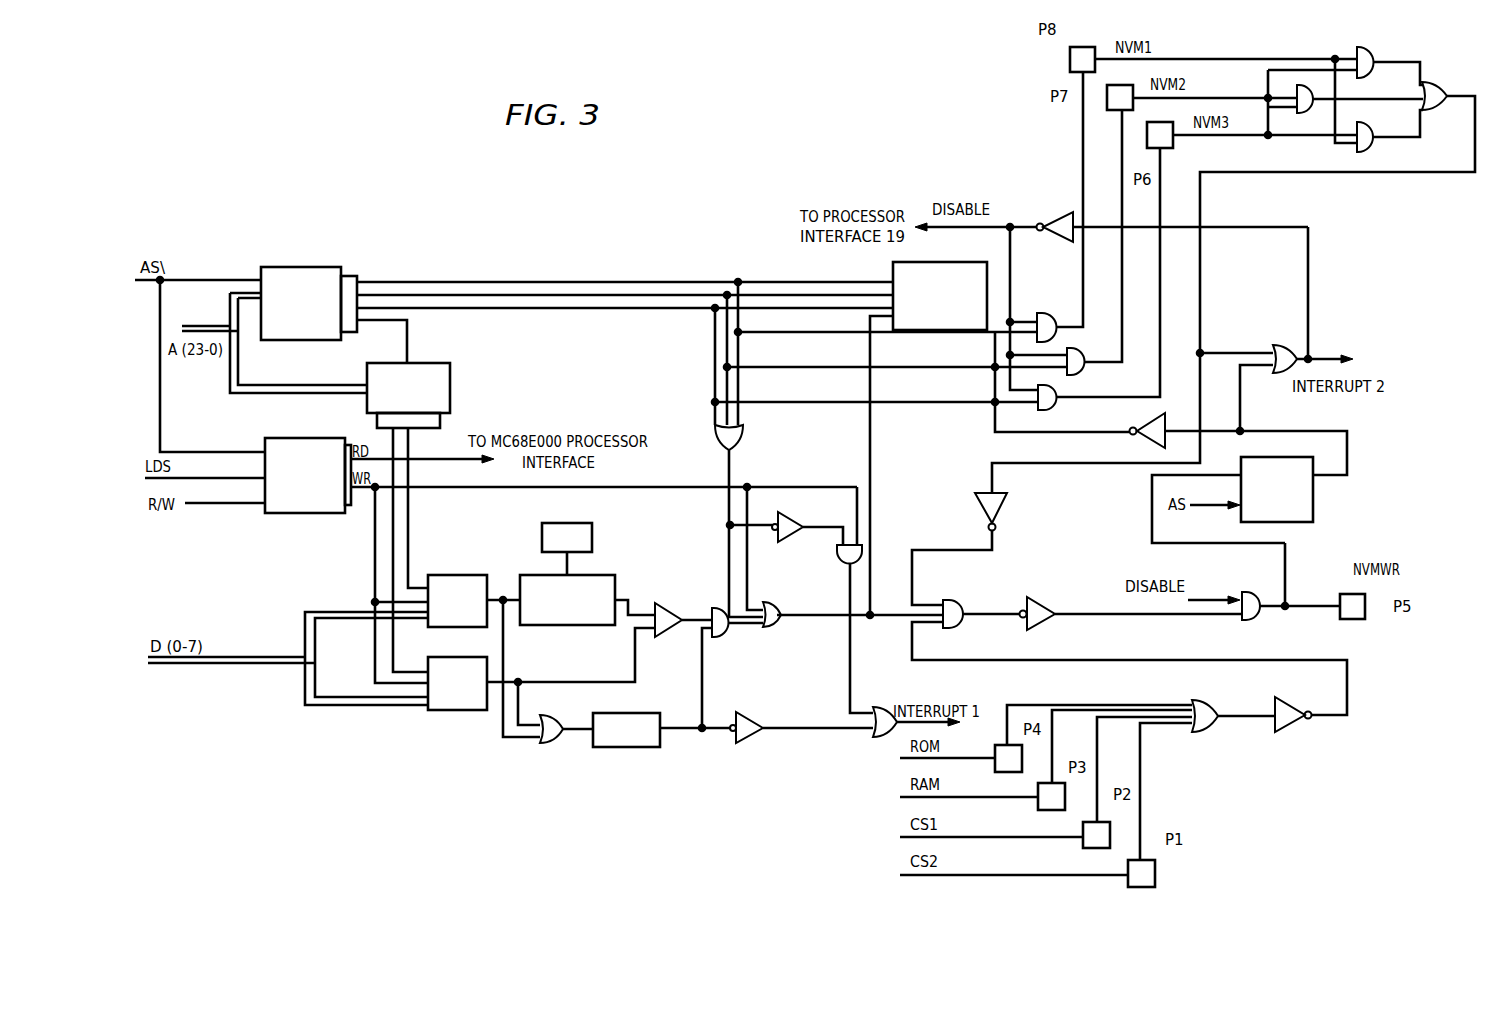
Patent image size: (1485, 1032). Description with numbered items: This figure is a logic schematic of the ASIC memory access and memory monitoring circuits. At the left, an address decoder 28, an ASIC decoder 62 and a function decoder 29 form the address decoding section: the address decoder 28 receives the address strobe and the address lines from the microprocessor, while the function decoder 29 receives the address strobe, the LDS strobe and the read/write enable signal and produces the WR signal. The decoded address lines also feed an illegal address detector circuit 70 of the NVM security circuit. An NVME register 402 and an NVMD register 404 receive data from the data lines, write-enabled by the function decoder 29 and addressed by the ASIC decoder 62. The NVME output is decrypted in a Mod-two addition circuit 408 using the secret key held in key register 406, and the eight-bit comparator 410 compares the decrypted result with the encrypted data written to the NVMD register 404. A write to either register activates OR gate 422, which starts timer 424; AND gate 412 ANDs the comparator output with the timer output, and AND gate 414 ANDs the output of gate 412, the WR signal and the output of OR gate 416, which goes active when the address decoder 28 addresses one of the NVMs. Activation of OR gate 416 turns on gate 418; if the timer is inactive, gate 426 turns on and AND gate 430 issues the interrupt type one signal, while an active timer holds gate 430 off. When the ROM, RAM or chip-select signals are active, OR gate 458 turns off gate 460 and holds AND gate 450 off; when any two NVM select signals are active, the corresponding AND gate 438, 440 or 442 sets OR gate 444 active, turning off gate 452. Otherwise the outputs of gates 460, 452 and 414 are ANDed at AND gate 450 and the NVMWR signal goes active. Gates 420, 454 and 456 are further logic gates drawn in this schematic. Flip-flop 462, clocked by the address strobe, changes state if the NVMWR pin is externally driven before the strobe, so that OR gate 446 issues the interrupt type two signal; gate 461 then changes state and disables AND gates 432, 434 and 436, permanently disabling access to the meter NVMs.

The address decoder 28 is at (305, 267).
The ASIC decoder 62 is at (450, 378).
The function decoder 29 is at (287, 513).
The illegal address detector circuit 70 is at (917, 262).
The NVME register 402 is at (435, 575).
The NVMD register 404 is at (480, 710).
The key register 406 is at (590, 523).
The MOD 2 addition circuit 408 is at (600, 575).
The comparator 410 is at (662, 603).
The AND gate 412 is at (720, 637).
The AND gate 414 is at (775, 627).
The OR gate 416 is at (738, 442).
The gate 418 is at (790, 540).
The AND gate 420 is at (850, 548).
The OR gate 422 is at (550, 743).
The timer 424 is at (635, 747).
The gate 426 is at (752, 743).
The AND gate 430 is at (883, 707).
The AND gate 432 is at (1058, 305).
The AND gate 434 is at (1082, 352).
The AND gate 436 is at (1060, 408).
The AND gate 438 is at (1365, 47).
The AND gate 440 is at (1297, 93).
The AND gate 442 is at (1373, 147).
The OR gate 444 is at (1440, 86).
The OR gate 446 is at (1280, 345).
The AND gate 450 is at (956, 600).
The gate 452 is at (1003, 513).
The inverter 454 is at (1145, 436).
The inverter 456 is at (1050, 603).
The OR gate 458 is at (1215, 706).
The gate 460 is at (1285, 733).
The gate 461 is at (1058, 212).
The flip-flop 462 is at (1313, 505).